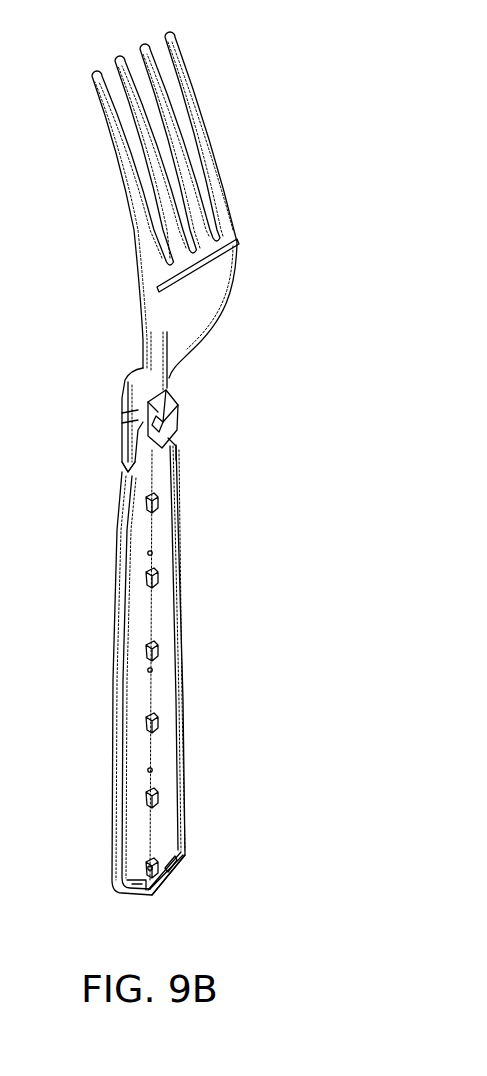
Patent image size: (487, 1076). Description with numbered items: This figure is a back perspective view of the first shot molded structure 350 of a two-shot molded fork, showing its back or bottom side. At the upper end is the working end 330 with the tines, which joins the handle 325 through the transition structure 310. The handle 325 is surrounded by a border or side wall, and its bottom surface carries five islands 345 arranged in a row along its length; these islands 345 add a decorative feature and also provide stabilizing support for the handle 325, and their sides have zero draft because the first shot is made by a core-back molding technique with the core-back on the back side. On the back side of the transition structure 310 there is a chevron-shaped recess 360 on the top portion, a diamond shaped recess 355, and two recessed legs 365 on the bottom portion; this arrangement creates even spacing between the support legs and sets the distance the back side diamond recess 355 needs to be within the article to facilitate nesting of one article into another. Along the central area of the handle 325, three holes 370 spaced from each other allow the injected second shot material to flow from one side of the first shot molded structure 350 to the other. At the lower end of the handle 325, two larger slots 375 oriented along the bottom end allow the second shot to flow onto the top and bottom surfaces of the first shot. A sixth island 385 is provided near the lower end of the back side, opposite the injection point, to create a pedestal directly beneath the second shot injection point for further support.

The first shot molded structure 350 is at (0, 208).
The working end 330 is at (211, 317).
The transition structure 310 is at (220, 430).
The chevron-shaped recess 360 is at (133, 420).
The diamond shaped recess 355 is at (173, 410).
The recessed legs 365 is at (173, 446).
The handle 325 is at (255, 637).
The islands 345 is at (160, 505).
The holes 370 is at (148, 553).
The slots 375 is at (132, 885).
The sixth island 385 is at (156, 873).